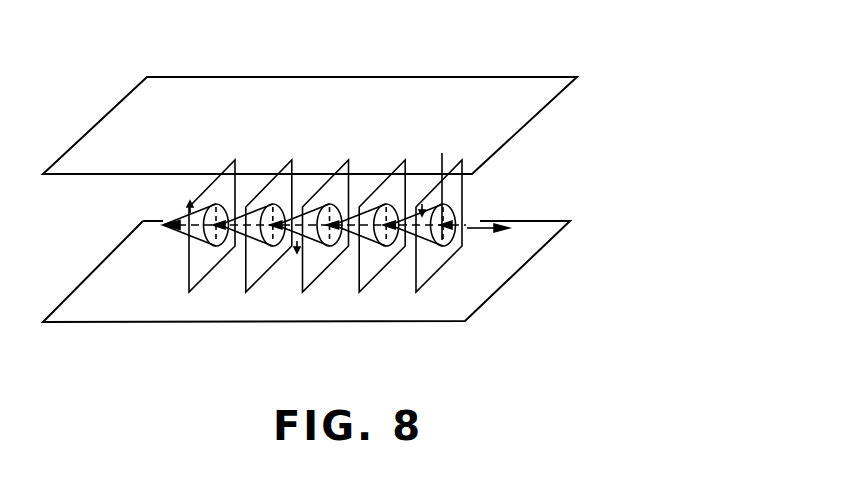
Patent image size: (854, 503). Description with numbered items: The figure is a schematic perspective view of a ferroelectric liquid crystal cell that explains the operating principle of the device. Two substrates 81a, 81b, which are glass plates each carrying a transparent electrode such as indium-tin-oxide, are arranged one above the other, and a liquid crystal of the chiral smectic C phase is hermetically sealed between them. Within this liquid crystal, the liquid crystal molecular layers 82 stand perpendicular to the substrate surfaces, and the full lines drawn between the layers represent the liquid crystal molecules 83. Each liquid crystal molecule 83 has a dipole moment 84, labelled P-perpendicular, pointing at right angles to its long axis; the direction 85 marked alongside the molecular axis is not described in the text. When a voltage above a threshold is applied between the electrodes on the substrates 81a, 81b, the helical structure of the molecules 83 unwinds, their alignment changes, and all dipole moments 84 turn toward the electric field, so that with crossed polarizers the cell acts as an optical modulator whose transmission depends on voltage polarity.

The substrate 81a is at (522, 88).
The substrate 81b is at (513, 260).
The liquid crystal molecular layers 82 is at (455, 187).
The liquid crystal molecules 83 is at (177, 232).
The dipole moment (P⊥) 84 is at (190, 205).
The output light direction 85 is at (468, 221).